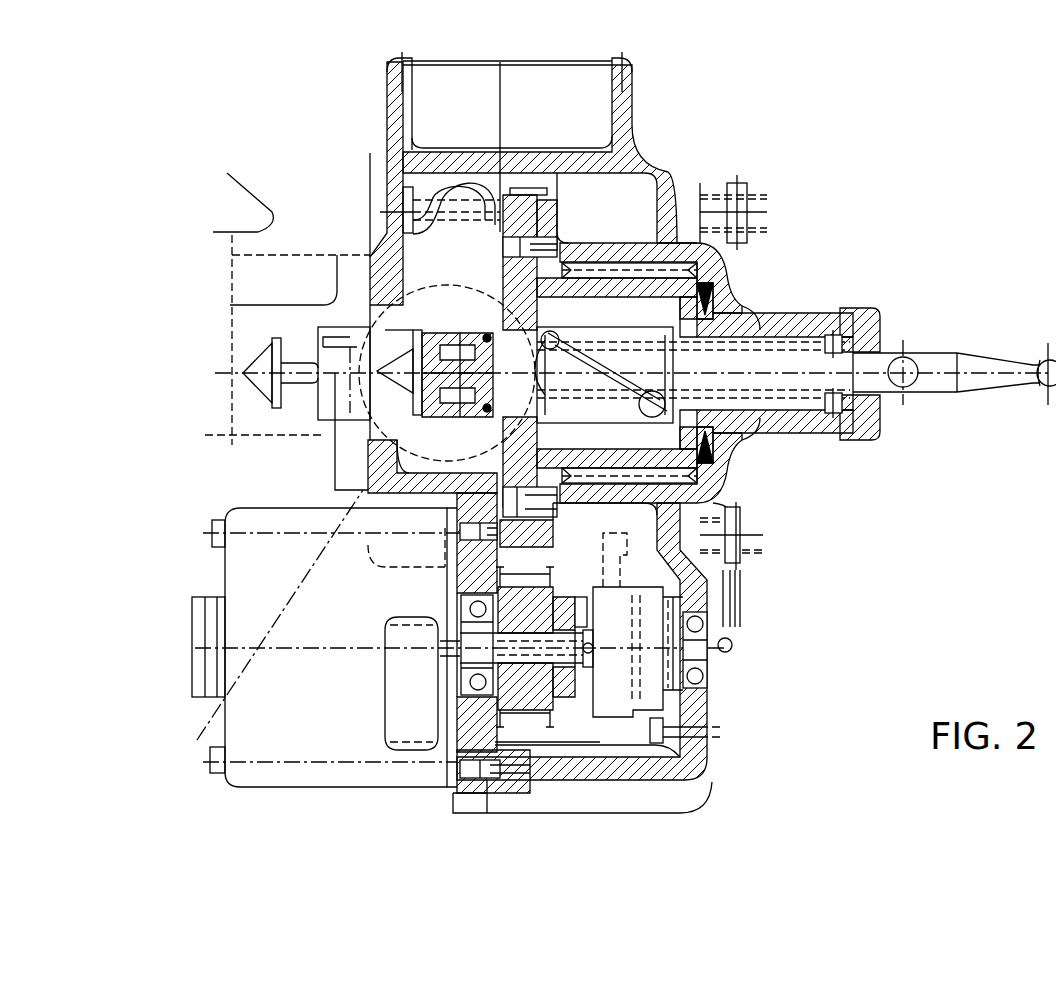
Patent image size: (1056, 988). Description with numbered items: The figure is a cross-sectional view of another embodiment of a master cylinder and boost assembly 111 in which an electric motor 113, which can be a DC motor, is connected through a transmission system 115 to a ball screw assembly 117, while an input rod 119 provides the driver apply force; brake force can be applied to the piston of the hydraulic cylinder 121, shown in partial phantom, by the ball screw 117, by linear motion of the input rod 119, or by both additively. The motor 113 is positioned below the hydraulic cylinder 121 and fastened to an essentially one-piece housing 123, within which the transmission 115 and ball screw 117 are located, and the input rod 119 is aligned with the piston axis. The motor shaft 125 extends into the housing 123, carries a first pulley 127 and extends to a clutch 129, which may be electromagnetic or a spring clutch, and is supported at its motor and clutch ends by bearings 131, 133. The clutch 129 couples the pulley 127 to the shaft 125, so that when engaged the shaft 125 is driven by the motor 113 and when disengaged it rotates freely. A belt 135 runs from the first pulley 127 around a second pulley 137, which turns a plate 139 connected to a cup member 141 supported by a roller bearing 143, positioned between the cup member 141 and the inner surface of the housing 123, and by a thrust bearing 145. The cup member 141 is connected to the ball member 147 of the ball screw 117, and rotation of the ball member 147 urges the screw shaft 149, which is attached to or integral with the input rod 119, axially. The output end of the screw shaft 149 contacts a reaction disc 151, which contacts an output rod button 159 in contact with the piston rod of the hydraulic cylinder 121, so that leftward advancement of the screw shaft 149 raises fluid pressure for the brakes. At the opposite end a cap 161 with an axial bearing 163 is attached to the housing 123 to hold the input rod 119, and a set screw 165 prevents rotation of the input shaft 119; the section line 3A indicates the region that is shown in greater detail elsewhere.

The master cylinder and boost assembly 111 is at (897, 545).
The electric motor 113 is at (246, 558).
The transmission system 115 is at (559, 555).
The ball screw assembly 117 is at (704, 458).
The input rod 119 is at (933, 362).
The hydraulic cylinder (master cylinder) 121 is at (237, 397).
The housing 123 is at (655, 150).
The shaft 125 is at (598, 655).
The first pulley 127 is at (545, 734).
The clutch 129 is at (613, 714).
The bearing 131 is at (460, 702).
The bearing 133 is at (713, 690).
The belt 135 is at (527, 181).
The second pulley 137 is at (557, 201).
The plate 139 is at (506, 278).
The cup member 141 is at (662, 468).
The roller bearing 143 is at (665, 258).
The thrust bearing 145 is at (714, 285).
The ball member 147 is at (543, 325).
The screw shaft 149 is at (558, 393).
The reaction disc 151 is at (434, 412).
The output rod button 159 is at (407, 341).
The cap 161 is at (844, 441).
The axial bearing 163 is at (884, 398).
The set screw 165 is at (864, 311).
The section line 3A is at (266, 626).